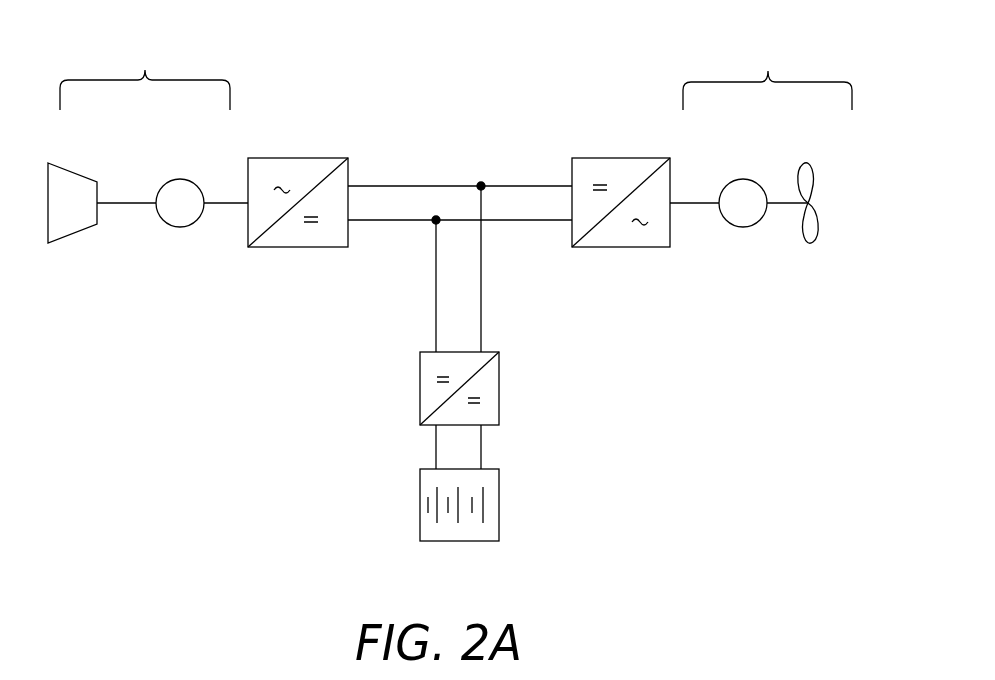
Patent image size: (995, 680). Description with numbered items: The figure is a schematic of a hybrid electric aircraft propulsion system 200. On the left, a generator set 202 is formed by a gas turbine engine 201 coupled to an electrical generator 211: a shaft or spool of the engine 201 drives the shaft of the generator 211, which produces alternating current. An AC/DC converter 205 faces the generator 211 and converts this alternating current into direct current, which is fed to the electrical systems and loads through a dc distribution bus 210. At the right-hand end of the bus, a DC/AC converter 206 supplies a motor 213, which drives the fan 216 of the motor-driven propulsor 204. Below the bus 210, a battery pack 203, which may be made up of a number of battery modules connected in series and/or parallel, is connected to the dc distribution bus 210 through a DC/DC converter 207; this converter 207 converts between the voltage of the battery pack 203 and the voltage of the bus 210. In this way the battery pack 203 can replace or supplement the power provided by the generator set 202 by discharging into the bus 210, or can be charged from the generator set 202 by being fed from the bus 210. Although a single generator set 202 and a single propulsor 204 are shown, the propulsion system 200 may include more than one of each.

The propulsion system 200 is at (211, 33).
The gas turbine engine 201 is at (72, 172).
The generator set 202 is at (145, 73).
The battery pack 203 is at (499, 504).
The motor-driven propulsor 204 is at (767, 74).
The AC/DC converter 205 is at (298, 158).
The DC/AC converter 206 is at (620, 158).
The DC/DC converter 207 is at (499, 388).
The dc distribution bus 210 is at (399, 186).
The electrical generator 211 is at (180, 179).
The motor 213 is at (743, 179).
The fan 216 is at (808, 163).